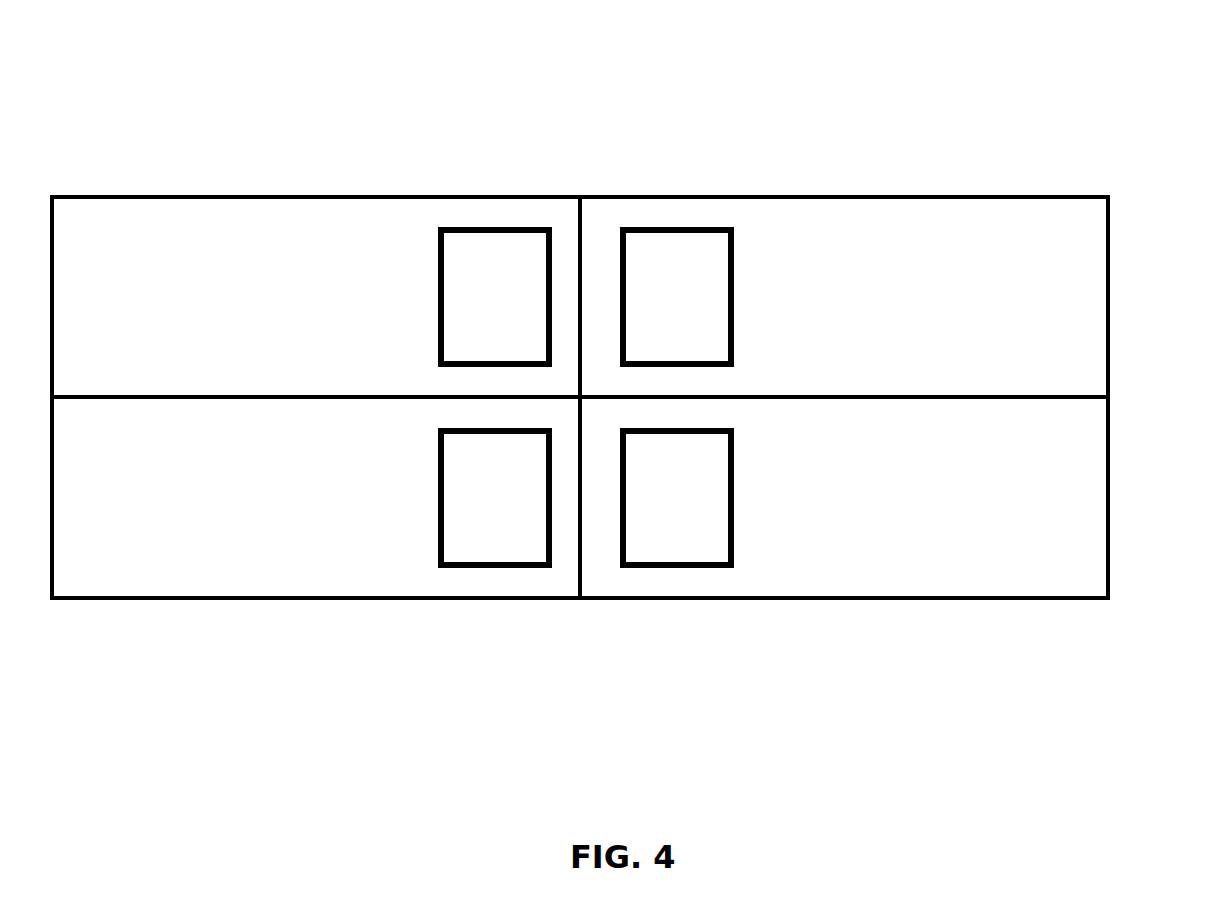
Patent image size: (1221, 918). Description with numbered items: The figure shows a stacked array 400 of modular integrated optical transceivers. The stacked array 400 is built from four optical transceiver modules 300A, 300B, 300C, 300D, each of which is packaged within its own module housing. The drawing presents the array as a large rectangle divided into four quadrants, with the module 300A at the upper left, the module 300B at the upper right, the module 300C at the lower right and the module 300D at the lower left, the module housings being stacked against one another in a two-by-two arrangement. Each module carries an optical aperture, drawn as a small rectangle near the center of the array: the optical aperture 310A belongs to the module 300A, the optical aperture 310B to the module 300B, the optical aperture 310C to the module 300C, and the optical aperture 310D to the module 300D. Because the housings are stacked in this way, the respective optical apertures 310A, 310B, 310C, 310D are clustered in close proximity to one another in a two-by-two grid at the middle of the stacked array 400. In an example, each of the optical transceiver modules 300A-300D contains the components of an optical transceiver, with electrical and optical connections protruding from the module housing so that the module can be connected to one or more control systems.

The stacked array 400 is at (1060, 123).
The optical transceiver module 300A is at (112, 195).
The optical transceiver module 300B is at (826, 195).
The optical transceiver module 300C is at (1110, 527).
The optical transceiver module 300D is at (158, 600).
The optical aperture 310A is at (462, 255).
The optical aperture 310B is at (657, 255).
The optical aperture 310C is at (678, 548).
The optical aperture 310D is at (477, 548).